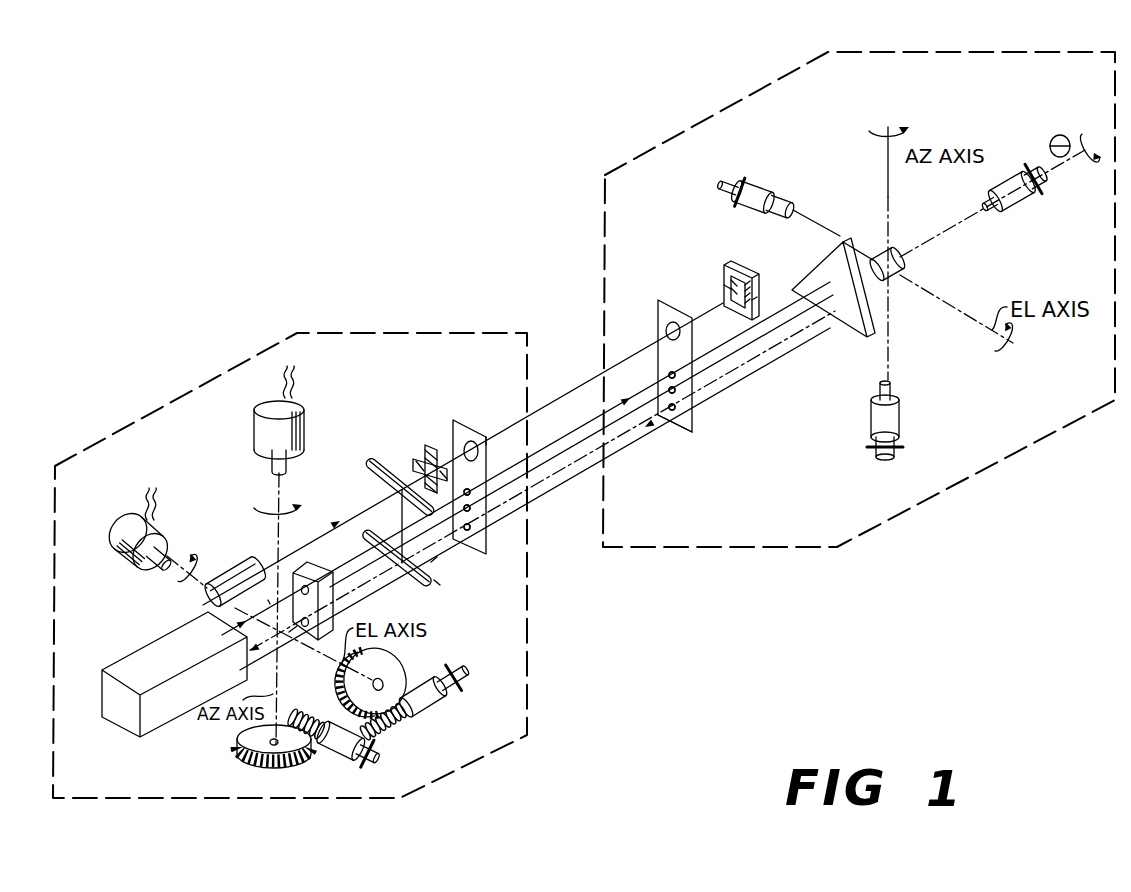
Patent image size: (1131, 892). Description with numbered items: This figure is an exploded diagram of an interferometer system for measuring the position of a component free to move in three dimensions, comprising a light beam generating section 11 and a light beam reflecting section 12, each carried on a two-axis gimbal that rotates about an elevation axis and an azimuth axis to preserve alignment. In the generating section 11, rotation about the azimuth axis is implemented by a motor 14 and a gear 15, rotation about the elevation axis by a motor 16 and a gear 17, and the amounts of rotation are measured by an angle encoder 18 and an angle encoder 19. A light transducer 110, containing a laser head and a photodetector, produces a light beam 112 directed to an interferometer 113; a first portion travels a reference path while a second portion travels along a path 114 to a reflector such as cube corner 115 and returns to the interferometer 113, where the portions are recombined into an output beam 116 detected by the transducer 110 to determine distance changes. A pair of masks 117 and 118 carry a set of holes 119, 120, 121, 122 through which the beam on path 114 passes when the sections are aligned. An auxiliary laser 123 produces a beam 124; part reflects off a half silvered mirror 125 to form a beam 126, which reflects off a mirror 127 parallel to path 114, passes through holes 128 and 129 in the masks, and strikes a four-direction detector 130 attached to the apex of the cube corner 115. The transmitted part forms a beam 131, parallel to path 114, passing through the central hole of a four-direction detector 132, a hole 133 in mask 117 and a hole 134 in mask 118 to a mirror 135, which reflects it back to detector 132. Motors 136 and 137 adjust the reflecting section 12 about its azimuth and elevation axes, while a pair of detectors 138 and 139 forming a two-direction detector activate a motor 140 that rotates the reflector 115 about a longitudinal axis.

The light beam generating section 11 is at (450, 762).
The light beam reflecting section 12 is at (670, 153).
The motor 14 is at (370, 758).
The gear 15 is at (246, 758).
The motor 16 is at (433, 707).
The gear 17 is at (413, 685).
The angle encoder 18 is at (122, 528).
The angle encoder 19 is at (254, 436).
The light transducer 110 is at (123, 723).
The light beam 112 is at (268, 603).
The interferometer 113 is at (313, 562).
The path 114 is at (546, 445).
The cube corner 115 is at (860, 335).
The output beam 116 is at (289, 632).
The mask 117 is at (456, 420).
The mask 118 is at (667, 420).
The hole 119 is at (470, 494).
The hole 120 is at (470, 527).
The hole 121 is at (673, 377).
The hole 122 is at (673, 409).
The laser 123 is at (206, 600).
The beam 124 is at (366, 505).
The half silvered mirror 125 is at (378, 460).
The beam 126 is at (437, 557).
The mirror 127 is at (440, 585).
The hole 128 is at (470, 510).
The hole 129 is at (673, 392).
The 4-direction detector 130 is at (898, 250).
The beam 131 is at (587, 380).
The 4-direction detector 132 is at (428, 447).
The hole 133 is at (488, 437).
The hole 134 is at (668, 323).
The mirror 135 is at (737, 266).
The motor 136 is at (877, 448).
The motor 137 is at (772, 182).
The detector 138 is at (723, 285).
The detector 139 is at (757, 297).
The motor 140 is at (1022, 200).